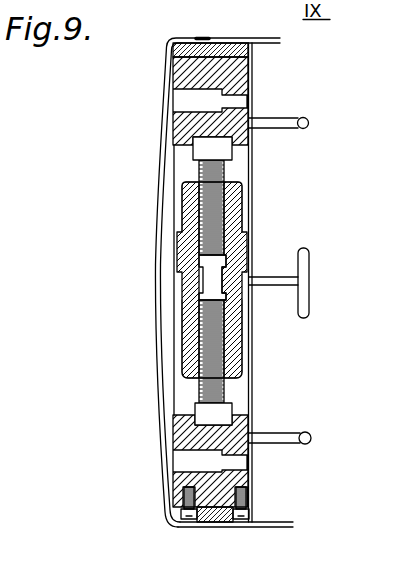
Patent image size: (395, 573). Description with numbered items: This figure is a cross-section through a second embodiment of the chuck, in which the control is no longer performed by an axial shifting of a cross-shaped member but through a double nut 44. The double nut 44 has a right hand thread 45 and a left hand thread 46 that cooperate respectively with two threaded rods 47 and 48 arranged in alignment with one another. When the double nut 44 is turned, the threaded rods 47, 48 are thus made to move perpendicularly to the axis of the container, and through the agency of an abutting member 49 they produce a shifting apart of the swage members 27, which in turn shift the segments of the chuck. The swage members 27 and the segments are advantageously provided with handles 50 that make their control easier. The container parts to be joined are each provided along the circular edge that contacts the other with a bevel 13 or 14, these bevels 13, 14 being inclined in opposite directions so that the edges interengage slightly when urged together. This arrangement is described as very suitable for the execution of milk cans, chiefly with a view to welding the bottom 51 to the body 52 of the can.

The bevel 13 is at (200, 37).
The bevel 14 is at (230, 26).
The swage member 27 is at (224, 80).
The double nut 44 is at (245, 244).
The right hand thread 45 is at (233, 214).
The left hand thread 46 is at (243, 359).
The threaded rod 47 is at (196, 170).
The threaded rod 48 is at (201, 354).
The abutting member 49 is at (220, 148).
The handle 50 is at (298, 119).
The bottom 51 is at (161, 266).
The body 52 is at (282, 528).